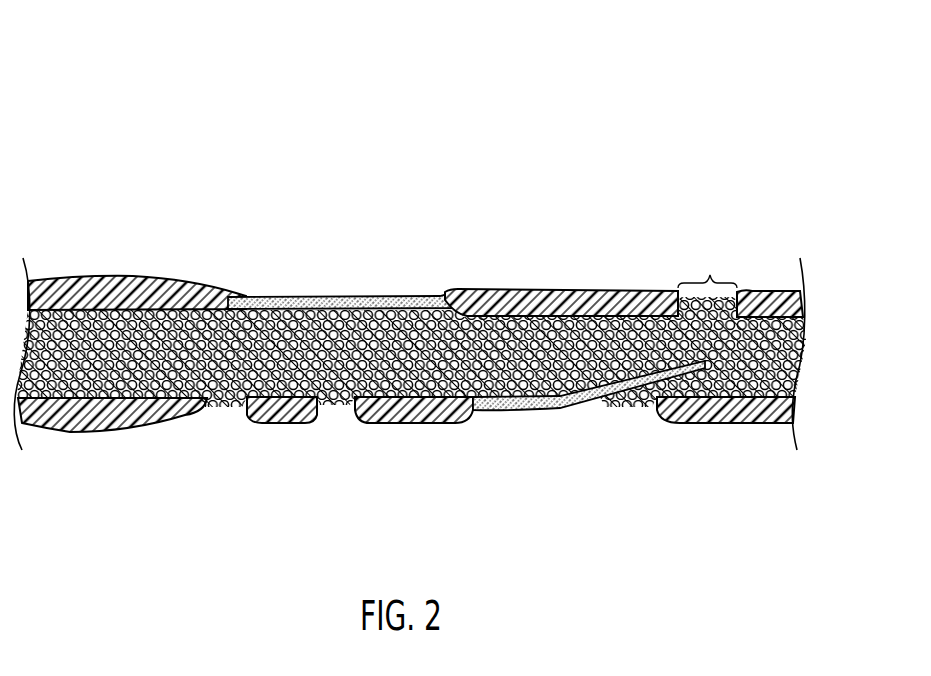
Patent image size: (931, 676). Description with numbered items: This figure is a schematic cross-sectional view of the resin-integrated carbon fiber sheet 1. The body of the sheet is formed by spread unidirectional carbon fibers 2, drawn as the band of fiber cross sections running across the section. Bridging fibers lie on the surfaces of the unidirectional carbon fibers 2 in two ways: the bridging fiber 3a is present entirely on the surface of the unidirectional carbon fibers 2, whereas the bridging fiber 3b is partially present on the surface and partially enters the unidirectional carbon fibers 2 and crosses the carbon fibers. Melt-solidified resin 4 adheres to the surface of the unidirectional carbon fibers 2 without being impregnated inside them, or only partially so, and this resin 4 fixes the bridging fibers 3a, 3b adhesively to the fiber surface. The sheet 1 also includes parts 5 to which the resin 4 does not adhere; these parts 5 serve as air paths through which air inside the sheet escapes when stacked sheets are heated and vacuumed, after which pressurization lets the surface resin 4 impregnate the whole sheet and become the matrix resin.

The resin-integrated carbon fiber sheet 1 is at (148, 113).
The unidirectional carbon fibers 2 is at (760, 290).
The bridging fiber 3a is at (342, 297).
The bridging fiber 3b is at (582, 410).
The resin 4 is at (553, 290).
The parts to which the resin does not adhere 5 is at (709, 273).